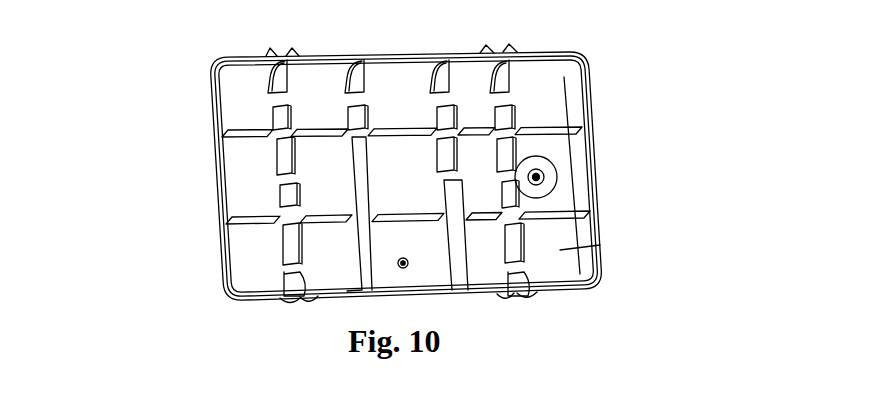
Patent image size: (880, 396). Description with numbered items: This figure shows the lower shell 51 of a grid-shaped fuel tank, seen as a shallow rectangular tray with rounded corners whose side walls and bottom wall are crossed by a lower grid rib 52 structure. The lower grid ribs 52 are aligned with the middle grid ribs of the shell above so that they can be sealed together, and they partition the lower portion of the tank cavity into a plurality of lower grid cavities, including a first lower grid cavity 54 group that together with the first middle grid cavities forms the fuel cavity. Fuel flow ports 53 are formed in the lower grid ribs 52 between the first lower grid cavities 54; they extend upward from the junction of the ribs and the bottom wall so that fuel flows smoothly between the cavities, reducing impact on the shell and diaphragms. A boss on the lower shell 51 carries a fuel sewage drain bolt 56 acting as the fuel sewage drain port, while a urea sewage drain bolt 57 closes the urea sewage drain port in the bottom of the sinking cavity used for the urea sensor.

The lower shell 51 is at (218, 118).
The lower grid rib 52 is at (297, 203).
The fuel flow port 53 is at (499, 96).
The first lower grid cavity 54 is at (553, 262).
The fuel sewage drain bolt 56 is at (541, 178).
The urea sewage drain bolt 57 is at (403, 263).